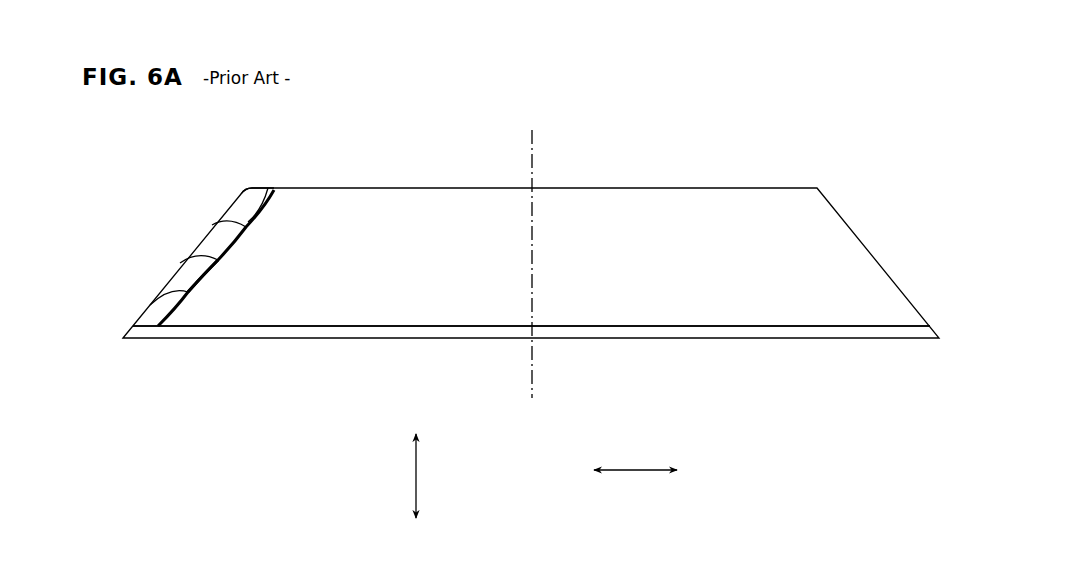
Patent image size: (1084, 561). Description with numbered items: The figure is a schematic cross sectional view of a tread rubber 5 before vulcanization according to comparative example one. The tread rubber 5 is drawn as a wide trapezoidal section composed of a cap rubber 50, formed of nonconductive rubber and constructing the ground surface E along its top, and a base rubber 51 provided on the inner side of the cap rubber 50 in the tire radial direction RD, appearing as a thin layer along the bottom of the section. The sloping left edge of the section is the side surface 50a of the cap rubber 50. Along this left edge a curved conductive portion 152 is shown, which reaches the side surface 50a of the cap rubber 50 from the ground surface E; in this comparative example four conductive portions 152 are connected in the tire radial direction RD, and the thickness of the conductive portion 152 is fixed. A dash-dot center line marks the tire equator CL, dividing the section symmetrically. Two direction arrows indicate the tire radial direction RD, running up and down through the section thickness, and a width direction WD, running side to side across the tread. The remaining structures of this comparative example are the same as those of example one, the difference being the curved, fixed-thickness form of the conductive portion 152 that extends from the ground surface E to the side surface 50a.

The cap rubber 50 is at (401, 200).
The side surface 50a is at (166, 285).
The base rubber 51 is at (400, 340).
The conductive portion 152 is at (242, 246).
The tread rubber 5 is at (336, 374).
The ground surface E is at (262, 187).
The tire equator CL is at (529, 282).
The tire radial direction RD is at (438, 476).
The width direction WD is at (635, 493).